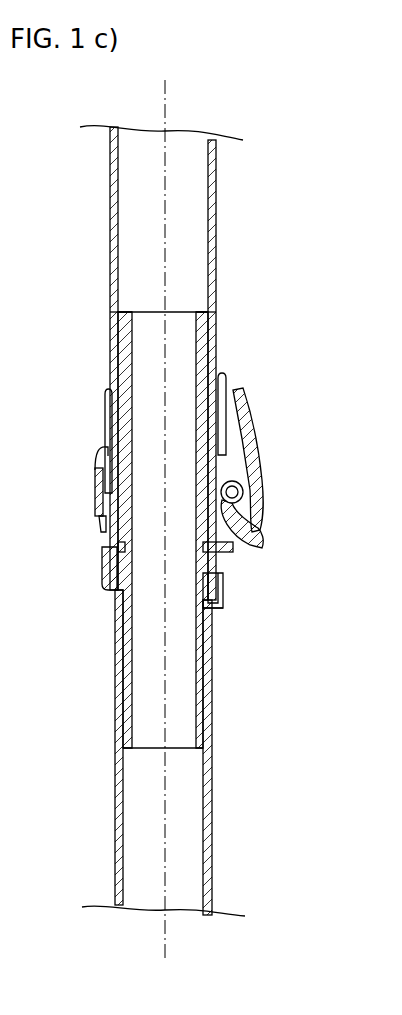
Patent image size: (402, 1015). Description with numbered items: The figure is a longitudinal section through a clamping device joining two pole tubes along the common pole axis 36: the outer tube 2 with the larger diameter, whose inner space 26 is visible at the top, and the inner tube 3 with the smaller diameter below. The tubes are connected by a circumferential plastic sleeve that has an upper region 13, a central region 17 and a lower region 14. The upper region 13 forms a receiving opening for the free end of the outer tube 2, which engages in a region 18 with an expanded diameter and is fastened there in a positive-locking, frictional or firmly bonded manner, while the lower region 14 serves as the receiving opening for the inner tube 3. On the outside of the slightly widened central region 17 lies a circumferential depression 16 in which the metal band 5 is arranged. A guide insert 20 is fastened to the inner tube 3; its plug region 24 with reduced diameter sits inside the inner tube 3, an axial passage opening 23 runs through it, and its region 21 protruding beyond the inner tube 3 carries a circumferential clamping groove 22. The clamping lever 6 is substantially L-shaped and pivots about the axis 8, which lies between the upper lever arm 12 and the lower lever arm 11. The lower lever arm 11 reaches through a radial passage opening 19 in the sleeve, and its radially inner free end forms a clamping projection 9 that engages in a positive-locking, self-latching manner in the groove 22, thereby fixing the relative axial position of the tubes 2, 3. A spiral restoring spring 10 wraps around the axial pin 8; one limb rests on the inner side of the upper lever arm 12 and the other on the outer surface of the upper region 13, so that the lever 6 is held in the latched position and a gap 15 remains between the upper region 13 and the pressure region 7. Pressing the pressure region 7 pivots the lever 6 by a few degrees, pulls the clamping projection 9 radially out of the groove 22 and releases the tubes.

The outer tube 2 is at (218, 164).
The inner tube 3 is at (185, 823).
The metal band 5 is at (95, 492).
The clamping lever 6 is at (250, 480).
The pressure region 7 is at (243, 387).
The axis 8 is at (245, 500).
The clamping projection 9 is at (216, 610).
The restoring spring 10 is at (234, 494).
The lower lever arm 11 is at (228, 577).
The upper lever arm 12 is at (248, 423).
The upper region 13 is at (105, 390).
The lower region 14 is at (100, 555).
The gap 15 is at (226, 383).
The circumferential depression 16 is at (100, 522).
The central region 17 is at (98, 460).
The region with expanded diameter 18 is at (102, 447).
The passage opening 19 is at (220, 524).
The guide insert 20 is at (212, 690).
The protruding region 21 is at (117, 318).
The clamping groove 22 is at (118, 548).
The axial passage opening 23 is at (207, 312).
The plug region 24 is at (117, 705).
The inner space 26 is at (195, 217).
The pole axis 36 is at (163, 105).